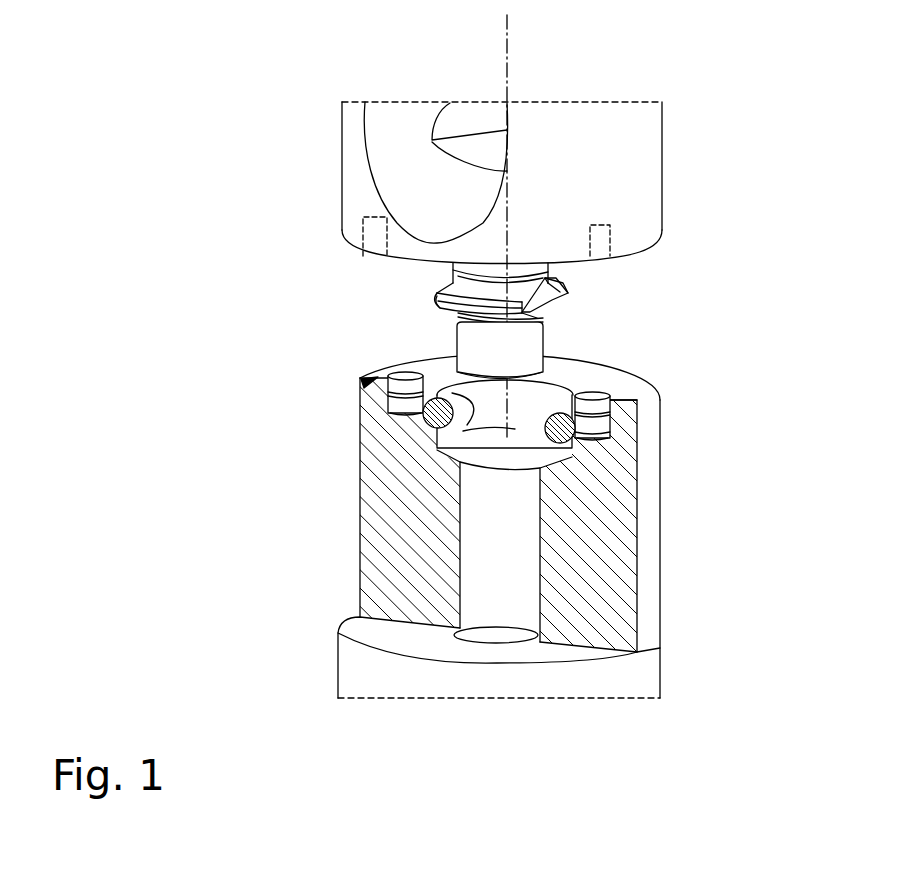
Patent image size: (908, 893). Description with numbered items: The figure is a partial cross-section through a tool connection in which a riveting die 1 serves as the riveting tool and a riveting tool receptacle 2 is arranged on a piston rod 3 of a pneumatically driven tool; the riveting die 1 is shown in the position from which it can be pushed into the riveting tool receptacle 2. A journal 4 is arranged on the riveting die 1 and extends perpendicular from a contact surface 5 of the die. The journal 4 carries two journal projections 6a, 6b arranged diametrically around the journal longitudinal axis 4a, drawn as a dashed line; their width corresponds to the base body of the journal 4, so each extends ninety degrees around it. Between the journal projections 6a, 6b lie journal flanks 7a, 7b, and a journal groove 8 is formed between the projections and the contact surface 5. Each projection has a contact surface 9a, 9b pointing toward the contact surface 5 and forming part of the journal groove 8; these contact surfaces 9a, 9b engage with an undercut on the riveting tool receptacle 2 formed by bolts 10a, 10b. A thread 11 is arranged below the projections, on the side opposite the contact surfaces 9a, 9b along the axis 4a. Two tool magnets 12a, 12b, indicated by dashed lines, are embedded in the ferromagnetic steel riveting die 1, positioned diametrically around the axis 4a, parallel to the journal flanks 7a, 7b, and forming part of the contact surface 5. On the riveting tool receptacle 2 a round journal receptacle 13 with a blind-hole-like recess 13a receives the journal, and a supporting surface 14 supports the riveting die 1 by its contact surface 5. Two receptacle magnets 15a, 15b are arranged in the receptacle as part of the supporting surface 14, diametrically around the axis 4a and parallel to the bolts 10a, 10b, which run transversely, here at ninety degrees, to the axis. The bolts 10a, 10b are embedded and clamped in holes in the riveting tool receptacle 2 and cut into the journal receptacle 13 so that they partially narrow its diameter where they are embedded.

The riveting die 1 is at (638, 132).
The riveting tool receptacle 2 is at (335, 372).
The piston rod 3 is at (395, 568).
The journal 4 is at (770, 295).
The journal longitudinal axis 4a is at (508, 46).
The contact surface 5 is at (352, 248).
The journal projection 6a is at (552, 298).
The journal projection 6b is at (433, 308).
The journal flank 7a is at (545, 302).
The journal flank 7b is at (449, 266).
The journal groove 8 is at (575, 270).
The contact surface 9a is at (568, 290).
The contact surface 9b is at (430, 292).
The bolt 10a is at (560, 428).
The bolt 10b is at (438, 413).
The thread 11 is at (532, 348).
The tool magnet 12a is at (605, 228).
The tool magnet 12b is at (373, 223).
The journal receptacle 13 is at (441, 439).
The blind-hole-like recess 13a is at (500, 549).
The supporting surface 14 is at (610, 381).
The receptacle magnet 15a is at (612, 398).
The receptacle magnet 15b is at (400, 390).